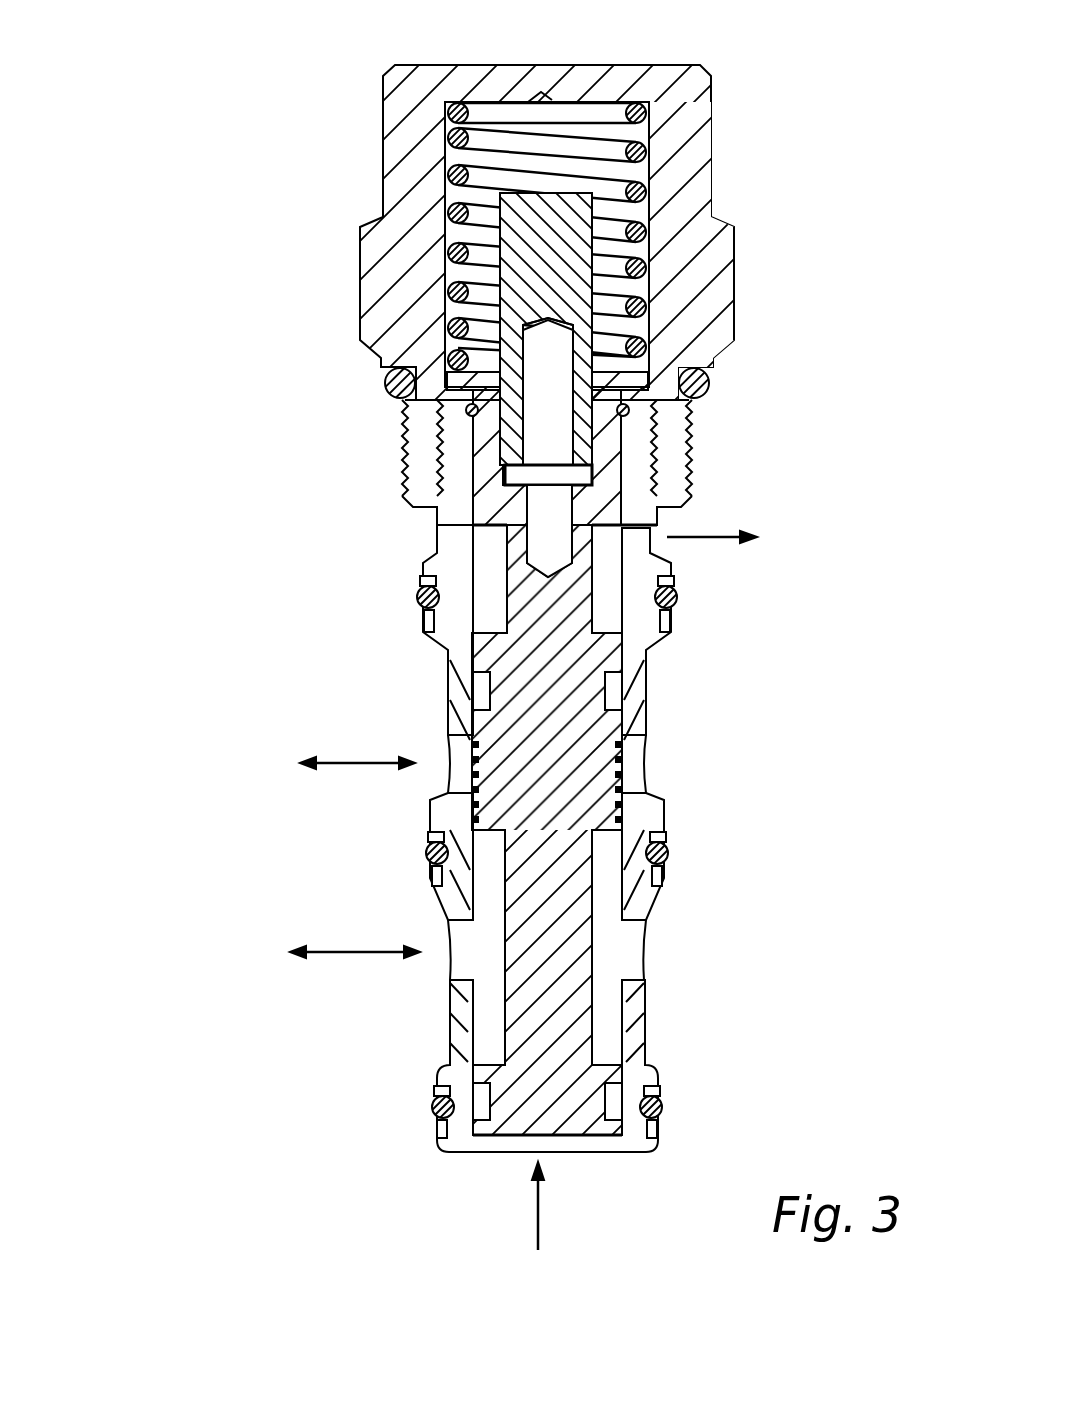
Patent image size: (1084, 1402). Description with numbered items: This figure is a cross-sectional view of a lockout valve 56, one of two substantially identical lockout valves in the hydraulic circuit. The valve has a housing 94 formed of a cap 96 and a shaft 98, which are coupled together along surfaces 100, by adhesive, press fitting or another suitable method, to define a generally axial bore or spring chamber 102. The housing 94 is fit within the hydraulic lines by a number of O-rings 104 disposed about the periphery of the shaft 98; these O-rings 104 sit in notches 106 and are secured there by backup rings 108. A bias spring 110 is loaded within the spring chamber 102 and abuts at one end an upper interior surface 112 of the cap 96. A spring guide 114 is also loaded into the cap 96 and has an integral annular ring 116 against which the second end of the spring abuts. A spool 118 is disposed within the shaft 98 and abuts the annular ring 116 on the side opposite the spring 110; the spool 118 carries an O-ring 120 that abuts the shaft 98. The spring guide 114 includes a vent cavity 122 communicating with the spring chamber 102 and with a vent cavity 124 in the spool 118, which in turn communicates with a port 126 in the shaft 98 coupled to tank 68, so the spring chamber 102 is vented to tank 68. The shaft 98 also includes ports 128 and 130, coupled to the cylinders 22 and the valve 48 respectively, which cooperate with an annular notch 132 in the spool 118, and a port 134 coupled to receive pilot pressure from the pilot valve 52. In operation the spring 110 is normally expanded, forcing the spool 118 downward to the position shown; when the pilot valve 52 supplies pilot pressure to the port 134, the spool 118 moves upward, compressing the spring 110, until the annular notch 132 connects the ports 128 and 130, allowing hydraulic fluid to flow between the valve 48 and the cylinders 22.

The lockout valve 56 is at (350, 62).
The housing 94 is at (380, 89).
The cap 96 is at (382, 125).
The shaft 98 is at (450, 660).
The surfaces 100 is at (655, 455).
The spring chamber 102 is at (457, 232).
The O-rings 104 is at (710, 383).
The notches 106 is at (655, 645).
The backup rings 108 is at (673, 615).
The bias spring 110 is at (597, 112).
The upper interior surface 112 is at (483, 103).
The spring guide 114 is at (577, 218).
The annular ring 116 is at (713, 346).
The spool 118 is at (590, 752).
The O-ring 120 is at (465, 405).
The vent cavity 122 is at (566, 388).
The vent cavity 124 is at (568, 532).
The port 126 is at (672, 563).
The port 128 is at (470, 740).
The port 130 is at (460, 968).
The annular notch 132 is at (485, 1037).
The port 134 is at (478, 1152).
The tank 68 is at (788, 538).
The cylinders 22 is at (253, 762).
The valve 48 is at (276, 955).
The pilot valve 52 is at (548, 1262).